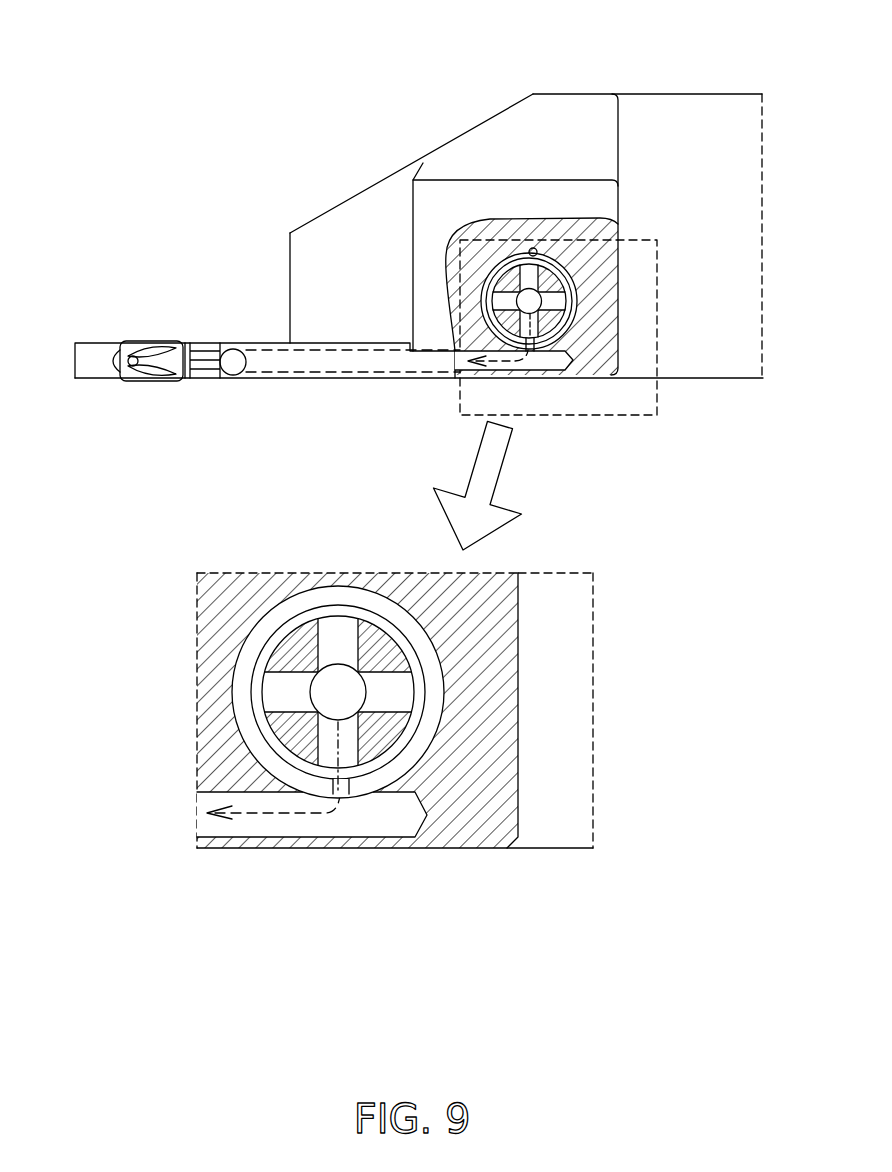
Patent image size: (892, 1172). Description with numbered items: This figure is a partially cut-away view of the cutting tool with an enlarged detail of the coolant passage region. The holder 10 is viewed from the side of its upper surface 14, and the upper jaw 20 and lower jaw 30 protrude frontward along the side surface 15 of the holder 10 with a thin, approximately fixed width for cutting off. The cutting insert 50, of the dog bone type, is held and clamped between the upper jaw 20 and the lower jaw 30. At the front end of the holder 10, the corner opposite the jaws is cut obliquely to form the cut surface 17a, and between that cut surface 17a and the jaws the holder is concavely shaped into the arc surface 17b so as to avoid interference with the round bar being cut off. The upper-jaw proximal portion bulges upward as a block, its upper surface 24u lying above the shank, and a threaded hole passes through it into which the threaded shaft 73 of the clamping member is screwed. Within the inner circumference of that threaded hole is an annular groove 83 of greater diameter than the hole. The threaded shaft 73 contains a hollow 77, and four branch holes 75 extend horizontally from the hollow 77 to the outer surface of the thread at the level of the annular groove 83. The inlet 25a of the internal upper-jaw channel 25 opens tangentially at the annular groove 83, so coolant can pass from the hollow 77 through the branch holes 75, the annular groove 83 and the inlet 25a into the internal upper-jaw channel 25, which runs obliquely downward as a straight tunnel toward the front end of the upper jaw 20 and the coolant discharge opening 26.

The holder 10 is at (598, 91).
The upper surface 14 is at (733, 355).
The side surface 15 is at (743, 380).
The cut surface 17a is at (378, 184).
The arc surface 17b is at (363, 242).
The upper jaw 20 is at (228, 338).
The upper surface of upper-jaw proximal portion 24u is at (598, 199).
The internal upper-jaw channel 25 is at (553, 370).
The inlet 25a is at (558, 351).
The coolant discharge opening 26 is at (236, 379).
The lower jaw 30 is at (88, 384).
The cutting insert 50 is at (120, 338).
The threaded shaft 73 is at (562, 280).
The branch holes 75 is at (548, 303).
The hollow 77 is at (522, 297).
The annular groove 83 is at (534, 248).